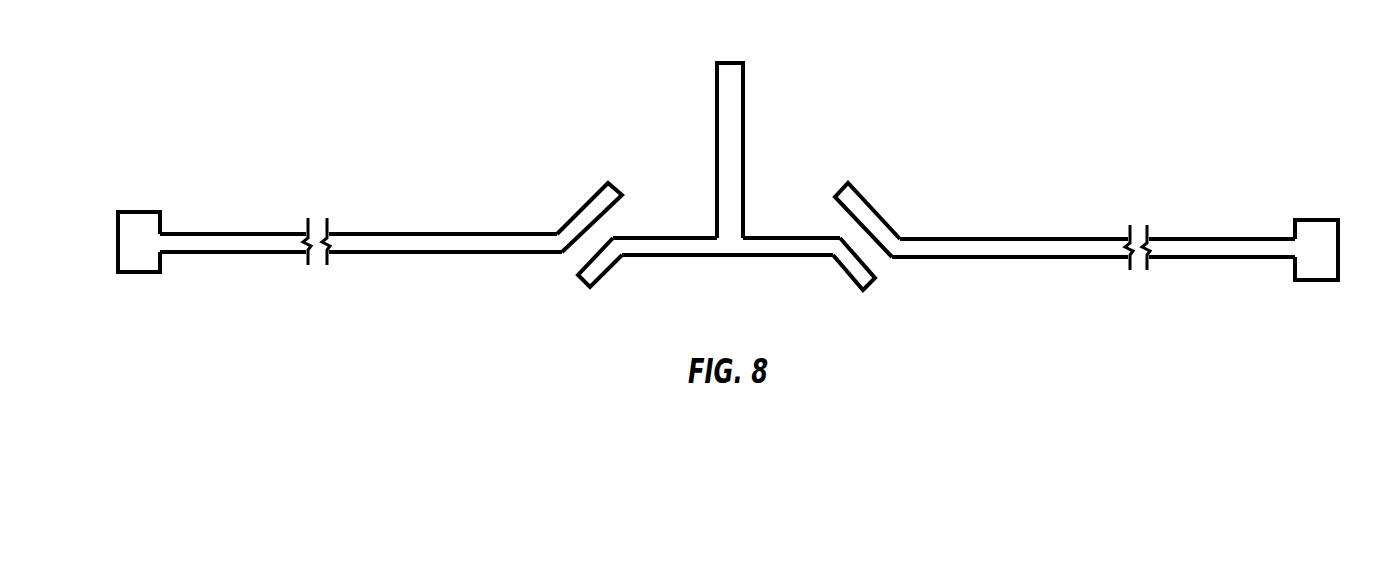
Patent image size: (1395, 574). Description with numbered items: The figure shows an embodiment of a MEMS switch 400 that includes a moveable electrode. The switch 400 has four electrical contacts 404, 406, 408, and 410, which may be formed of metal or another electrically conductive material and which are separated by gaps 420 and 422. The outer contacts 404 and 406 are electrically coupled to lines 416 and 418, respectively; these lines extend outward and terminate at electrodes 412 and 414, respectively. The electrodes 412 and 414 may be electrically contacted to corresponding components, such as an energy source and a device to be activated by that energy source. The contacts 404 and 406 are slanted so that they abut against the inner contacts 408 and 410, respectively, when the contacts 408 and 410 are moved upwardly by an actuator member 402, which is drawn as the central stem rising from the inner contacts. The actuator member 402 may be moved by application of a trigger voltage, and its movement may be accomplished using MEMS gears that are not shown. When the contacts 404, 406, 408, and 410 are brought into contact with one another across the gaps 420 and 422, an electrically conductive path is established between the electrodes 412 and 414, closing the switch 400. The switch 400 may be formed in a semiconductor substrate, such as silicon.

The MEMS switch 400 is at (999, 146).
The actuator member 402 is at (766, 150).
The electrical contact 404 is at (559, 212).
The electrical contact 406 is at (896, 215).
The electrical contact 408 is at (625, 279).
The electrical contact 410 is at (827, 279).
The electrode 412 is at (113, 226).
The electrode 414 is at (1344, 235).
The line 416 is at (361, 261).
The line 418 is at (1093, 266).
The gap 420 is at (571, 266).
The gap 422 is at (888, 268).